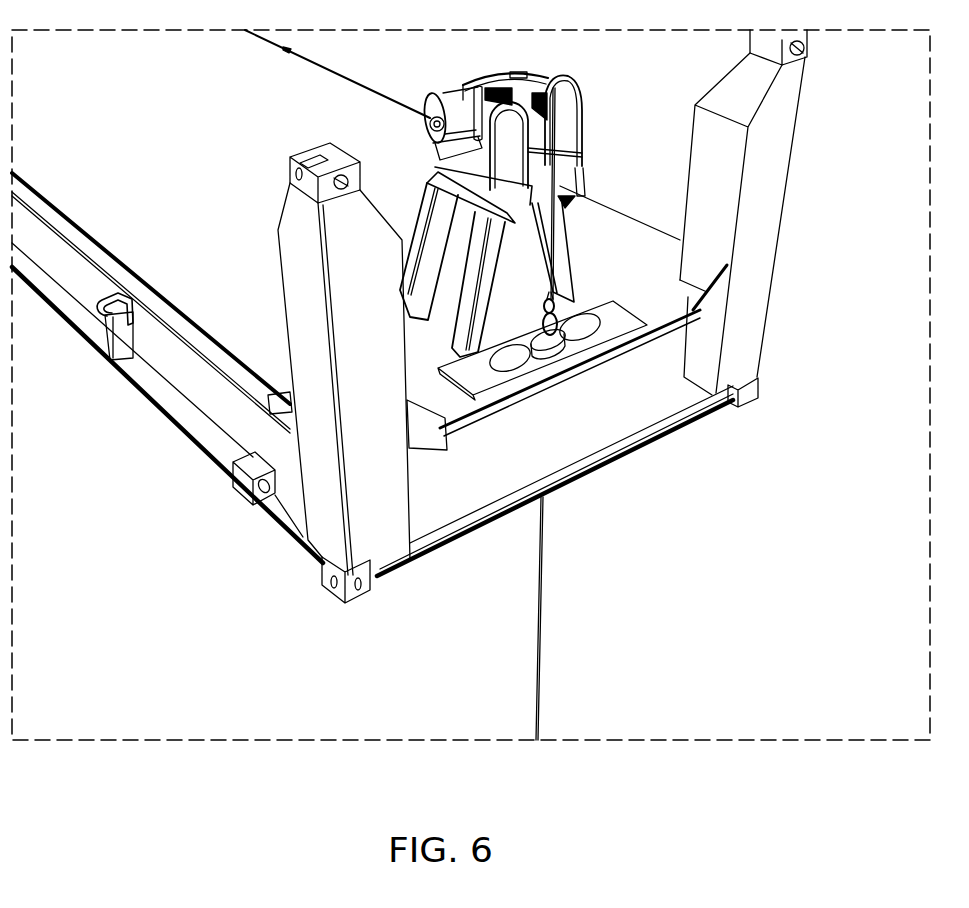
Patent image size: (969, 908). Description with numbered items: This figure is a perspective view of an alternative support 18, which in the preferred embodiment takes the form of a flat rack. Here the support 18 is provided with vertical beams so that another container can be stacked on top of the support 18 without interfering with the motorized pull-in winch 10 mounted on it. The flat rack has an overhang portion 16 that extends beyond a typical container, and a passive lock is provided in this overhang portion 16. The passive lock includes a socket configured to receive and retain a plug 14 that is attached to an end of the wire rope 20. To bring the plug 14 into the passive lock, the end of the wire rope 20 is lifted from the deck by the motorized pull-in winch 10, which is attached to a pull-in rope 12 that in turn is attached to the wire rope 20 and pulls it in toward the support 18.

The motorized pull-in winch 10 is at (452, 90).
The pull-in rope 12 is at (557, 250).
The plug 14 is at (540, 358).
The overhang portion 16 is at (600, 318).
The support 18 is at (634, 450).
The wire rope 20 is at (542, 634).